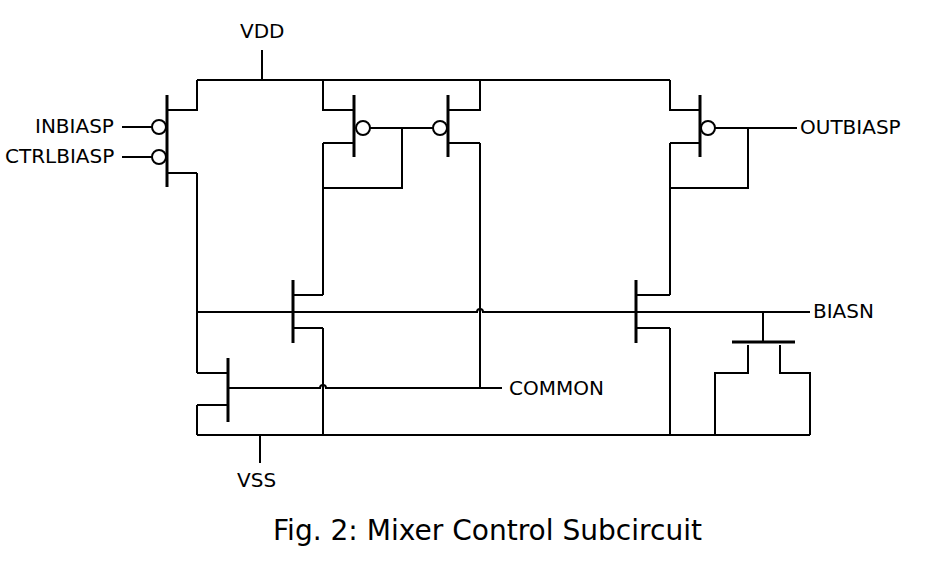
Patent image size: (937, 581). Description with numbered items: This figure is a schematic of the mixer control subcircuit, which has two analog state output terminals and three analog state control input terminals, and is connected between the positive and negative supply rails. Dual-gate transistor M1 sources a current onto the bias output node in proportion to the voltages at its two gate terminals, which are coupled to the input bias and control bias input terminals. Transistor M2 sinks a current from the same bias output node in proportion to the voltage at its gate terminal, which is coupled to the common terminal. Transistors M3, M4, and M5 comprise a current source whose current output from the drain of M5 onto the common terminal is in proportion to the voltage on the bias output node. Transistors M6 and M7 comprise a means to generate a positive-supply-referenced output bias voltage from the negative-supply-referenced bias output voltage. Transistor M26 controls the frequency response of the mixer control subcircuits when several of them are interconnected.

The dual-gate transistor M1 is at (195, 133).
The transistor M2 is at (196, 390).
The transistor M3 is at (324, 311).
The transistor M4 is at (346, 134).
The transistor M5 is at (472, 118).
The transistor M6 is at (668, 311).
The transistor M7 is at (691, 134).
The transistor M26 is at (762, 373).